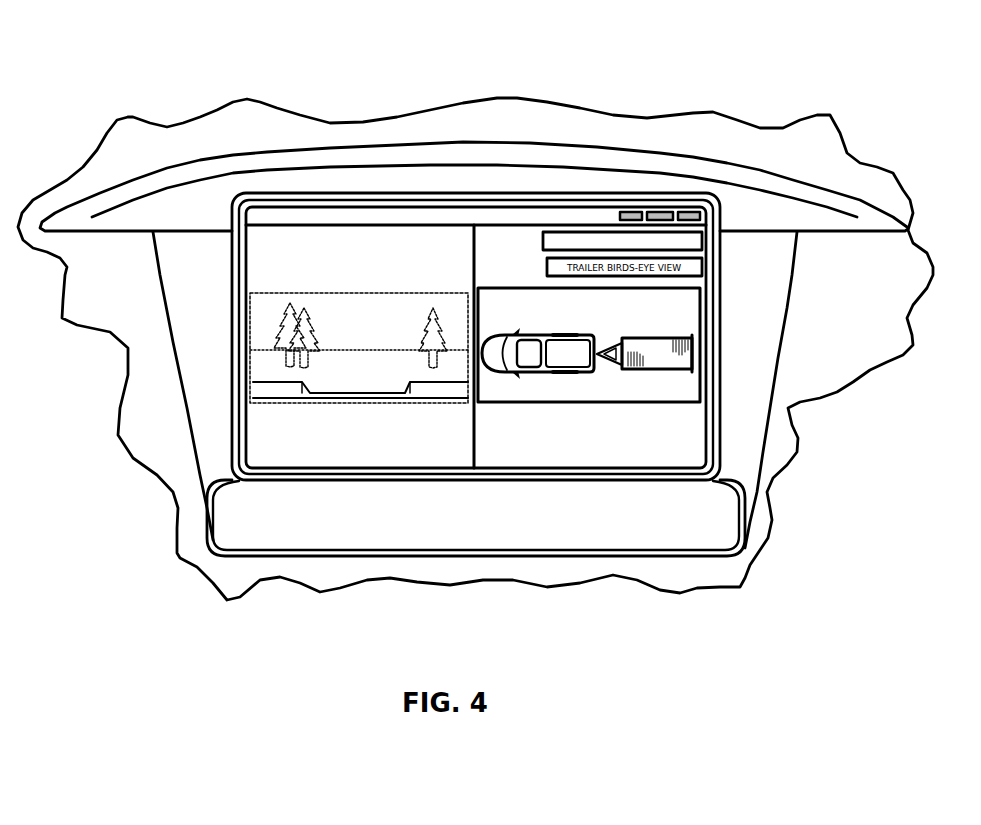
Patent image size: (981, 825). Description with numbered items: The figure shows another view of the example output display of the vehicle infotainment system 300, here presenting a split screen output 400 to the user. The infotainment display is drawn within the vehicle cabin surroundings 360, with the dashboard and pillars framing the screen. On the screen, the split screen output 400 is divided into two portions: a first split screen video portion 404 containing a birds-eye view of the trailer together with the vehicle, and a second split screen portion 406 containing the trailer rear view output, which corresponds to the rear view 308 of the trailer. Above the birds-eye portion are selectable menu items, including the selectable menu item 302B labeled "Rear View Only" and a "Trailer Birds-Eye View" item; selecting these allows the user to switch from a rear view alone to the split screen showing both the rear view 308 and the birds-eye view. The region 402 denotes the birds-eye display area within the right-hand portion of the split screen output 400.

The vehicle infotainment system 300 is at (476, 40).
The split screen output 400 is at (400, 100).
The vehicle cabin 360 is at (178, 555).
The rear view 308 is at (359, 339).
The selectable menu item 302B is at (543, 238).
The bird's-eye view display region 402 is at (602, 424).
The first split screen video portion 404 is at (580, 402).
The second split screen portion 406 is at (392, 403).